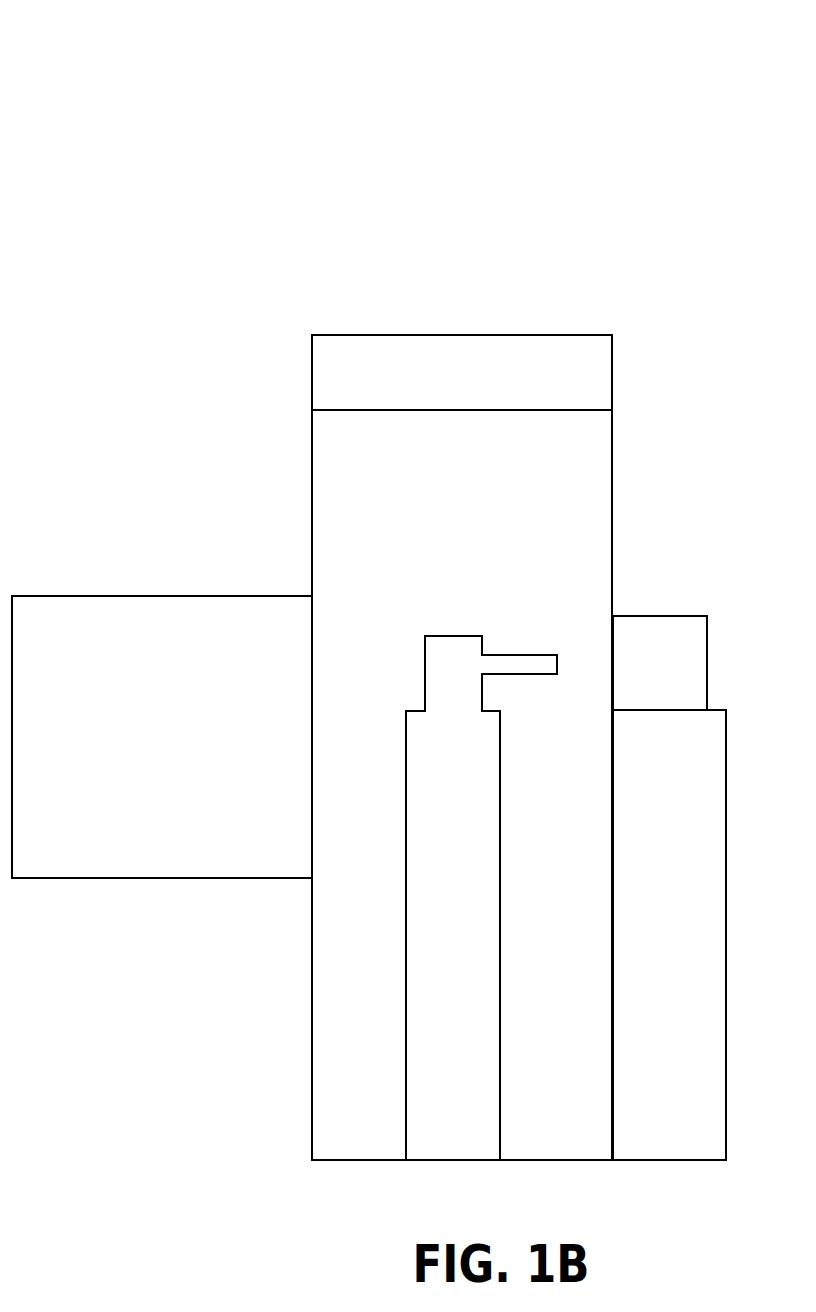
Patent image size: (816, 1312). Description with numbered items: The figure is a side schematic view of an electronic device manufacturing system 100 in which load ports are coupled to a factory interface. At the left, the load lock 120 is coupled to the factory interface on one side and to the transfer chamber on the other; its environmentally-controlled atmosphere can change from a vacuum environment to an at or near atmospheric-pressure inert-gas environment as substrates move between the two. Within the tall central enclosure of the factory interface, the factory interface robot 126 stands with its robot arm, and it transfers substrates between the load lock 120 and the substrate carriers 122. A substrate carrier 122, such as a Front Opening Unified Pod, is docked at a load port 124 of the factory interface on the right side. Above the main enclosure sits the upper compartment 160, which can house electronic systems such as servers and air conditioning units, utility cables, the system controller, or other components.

The electronic device manufacturing system 100 is at (131, 93).
The load lock 120 is at (134, 759).
The substrate carrier 122 is at (641, 674).
The load port 124 is at (650, 797).
The factory interface robot 126 is at (435, 778).
The upper compartment 160 is at (443, 385).